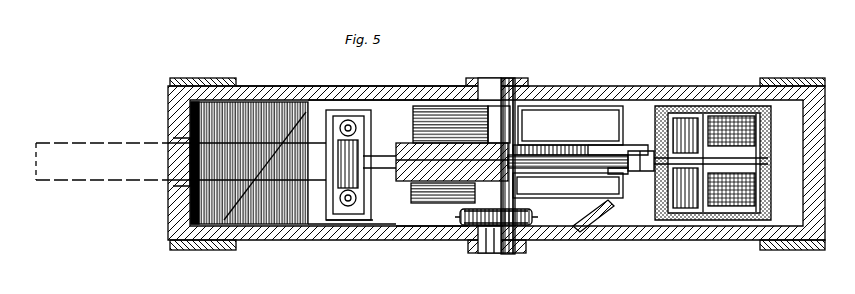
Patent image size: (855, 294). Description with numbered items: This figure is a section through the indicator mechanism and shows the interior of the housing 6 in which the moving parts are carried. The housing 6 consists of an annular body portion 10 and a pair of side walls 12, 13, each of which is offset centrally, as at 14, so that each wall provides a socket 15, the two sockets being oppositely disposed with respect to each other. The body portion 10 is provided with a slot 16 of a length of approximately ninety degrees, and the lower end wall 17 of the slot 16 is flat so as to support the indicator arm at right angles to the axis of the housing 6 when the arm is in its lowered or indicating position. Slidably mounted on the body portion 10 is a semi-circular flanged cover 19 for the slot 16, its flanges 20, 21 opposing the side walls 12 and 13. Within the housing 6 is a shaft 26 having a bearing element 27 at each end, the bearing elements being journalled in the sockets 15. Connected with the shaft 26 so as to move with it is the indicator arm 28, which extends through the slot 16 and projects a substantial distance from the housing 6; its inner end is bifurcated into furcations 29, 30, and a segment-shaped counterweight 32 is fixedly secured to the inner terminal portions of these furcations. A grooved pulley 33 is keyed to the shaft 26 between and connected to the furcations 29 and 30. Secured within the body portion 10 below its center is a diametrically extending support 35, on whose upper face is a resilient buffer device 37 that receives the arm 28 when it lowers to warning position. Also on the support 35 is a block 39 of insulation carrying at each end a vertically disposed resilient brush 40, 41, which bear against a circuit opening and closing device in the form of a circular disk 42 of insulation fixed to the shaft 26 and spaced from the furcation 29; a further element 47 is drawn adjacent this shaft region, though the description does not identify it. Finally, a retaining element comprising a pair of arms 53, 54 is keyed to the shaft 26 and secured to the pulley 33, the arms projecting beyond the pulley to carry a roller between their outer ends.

The housing 6 is at (310, 232).
The annular body portion 10 is at (175, 108).
The side wall 12 is at (420, 232).
The side wall 13 is at (395, 80).
The offset 14 is at (458, 72).
The socket 15 is at (478, 70).
The slot 16 is at (162, 172).
The lower end wall 17 is at (162, 139).
The semi-circular flanged cover 19 is at (188, 242).
The flange 20 is at (214, 242).
The flange 21 is at (222, 70).
The shaft 26 is at (505, 112).
The bearing element 27 is at (500, 80).
The indicator arm 28 is at (398, 176).
The furcation 29 is at (568, 186).
The furcation 30 is at (570, 124).
The segment-shaped counterweight 32 is at (585, 110).
The grooved pulley 33 is at (620, 140).
The diametrically extending support 35 is at (372, 212).
The resilient buffer device 37 is at (331, 190).
The block of insulation 39 is at (480, 232).
The brush 40 is at (447, 208).
The brush 41 is at (530, 208).
The circular disk of insulation 42 is at (460, 224).
The coupling 47 is at (604, 166).
The arm 53 is at (622, 163).
The arm 54 is at (628, 146).